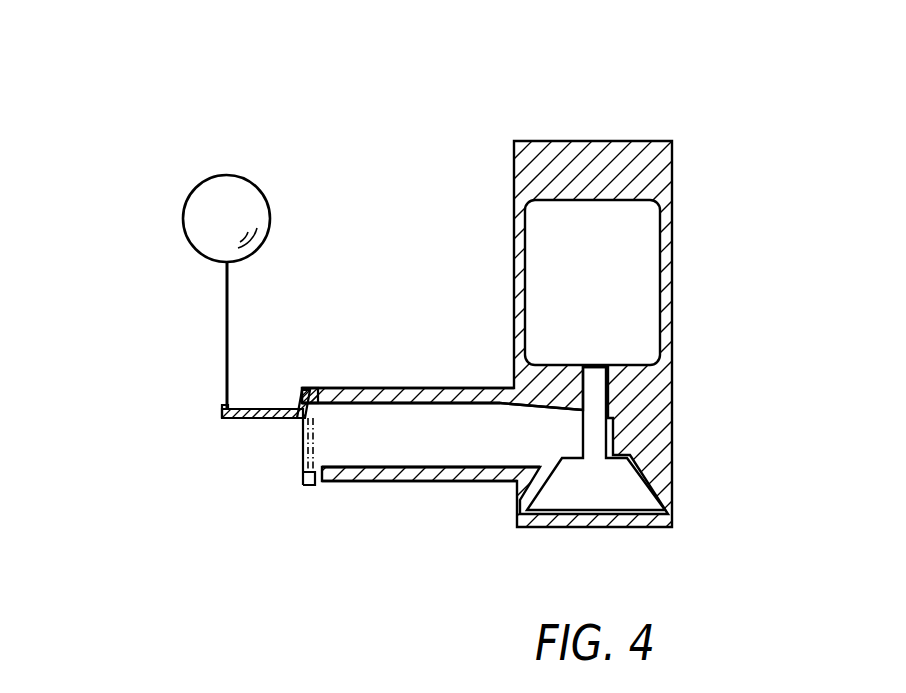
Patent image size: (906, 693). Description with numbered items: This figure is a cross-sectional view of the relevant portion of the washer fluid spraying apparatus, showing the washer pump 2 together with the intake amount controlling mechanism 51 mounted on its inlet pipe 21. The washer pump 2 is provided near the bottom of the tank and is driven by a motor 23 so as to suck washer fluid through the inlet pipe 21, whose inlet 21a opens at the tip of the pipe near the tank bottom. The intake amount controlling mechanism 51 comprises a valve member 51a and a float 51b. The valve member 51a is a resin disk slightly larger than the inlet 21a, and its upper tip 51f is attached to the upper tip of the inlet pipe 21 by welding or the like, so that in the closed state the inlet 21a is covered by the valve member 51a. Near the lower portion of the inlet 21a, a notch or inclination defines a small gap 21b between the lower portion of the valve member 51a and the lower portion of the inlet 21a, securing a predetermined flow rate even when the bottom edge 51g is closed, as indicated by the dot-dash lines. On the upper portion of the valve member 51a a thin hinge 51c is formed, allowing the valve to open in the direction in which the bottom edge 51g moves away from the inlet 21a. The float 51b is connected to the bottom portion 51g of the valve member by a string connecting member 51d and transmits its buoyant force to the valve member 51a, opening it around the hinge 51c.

The washer pump 2 is at (652, 133).
The inlet pipe 21 is at (433, 388).
The inlet 21a is at (325, 437).
The small gap 21b is at (303, 477).
The motor 23 is at (665, 237).
The intake amount controlling mechanism 51 is at (179, 329).
The valve member 51a is at (238, 407).
The float 51b is at (212, 200).
The thin hinge 51c is at (298, 394).
The string connecting member 51d is at (223, 297).
The upper tip of the valve member 51f is at (311, 389).
The bottom edge of the valve member 51g is at (222, 412).